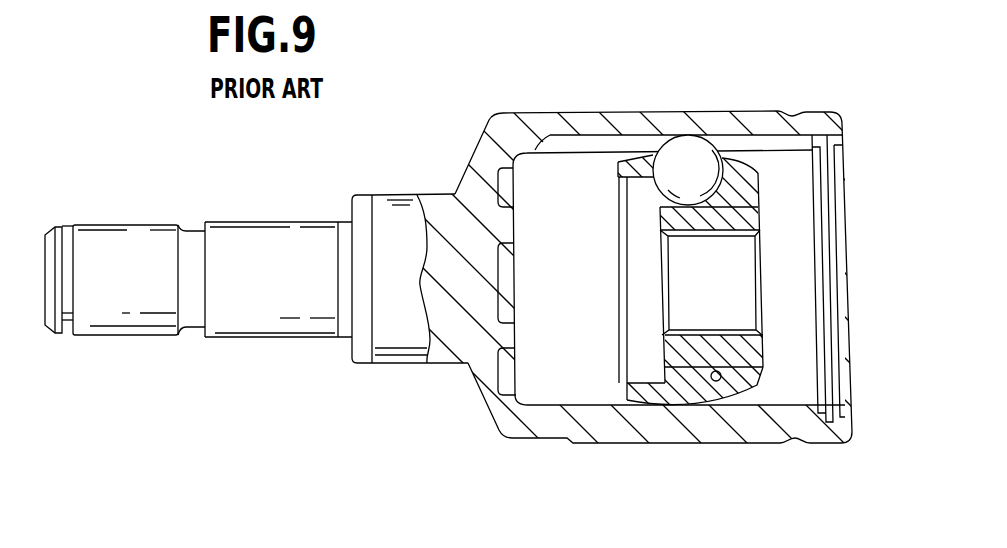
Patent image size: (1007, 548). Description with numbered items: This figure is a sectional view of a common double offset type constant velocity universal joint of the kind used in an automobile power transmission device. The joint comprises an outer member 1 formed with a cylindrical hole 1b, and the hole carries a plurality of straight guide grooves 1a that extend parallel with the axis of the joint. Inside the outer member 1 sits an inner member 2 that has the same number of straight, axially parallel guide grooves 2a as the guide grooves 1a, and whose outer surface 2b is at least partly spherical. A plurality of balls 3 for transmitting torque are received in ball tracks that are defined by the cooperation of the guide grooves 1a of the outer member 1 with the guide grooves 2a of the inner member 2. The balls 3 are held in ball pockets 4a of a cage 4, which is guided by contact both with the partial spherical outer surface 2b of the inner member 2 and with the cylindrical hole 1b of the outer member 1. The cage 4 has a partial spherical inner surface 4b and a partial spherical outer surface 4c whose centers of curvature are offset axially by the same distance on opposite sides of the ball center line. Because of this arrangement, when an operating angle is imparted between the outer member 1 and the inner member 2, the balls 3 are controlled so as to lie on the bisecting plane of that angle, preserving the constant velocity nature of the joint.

The outer member 1 is at (540, 126).
The guide grooves 1a is at (605, 133).
The cylindrical hole 1b is at (582, 405).
The inner member 2 is at (760, 178).
The guide grooves 2a is at (762, 190).
The outer surface 2b is at (748, 398).
The balls 3 is at (688, 155).
The cage 4 is at (737, 212).
The ball pockets 4a is at (660, 158).
The inner surface 4b is at (716, 382).
The outer surface 4c is at (620, 406).